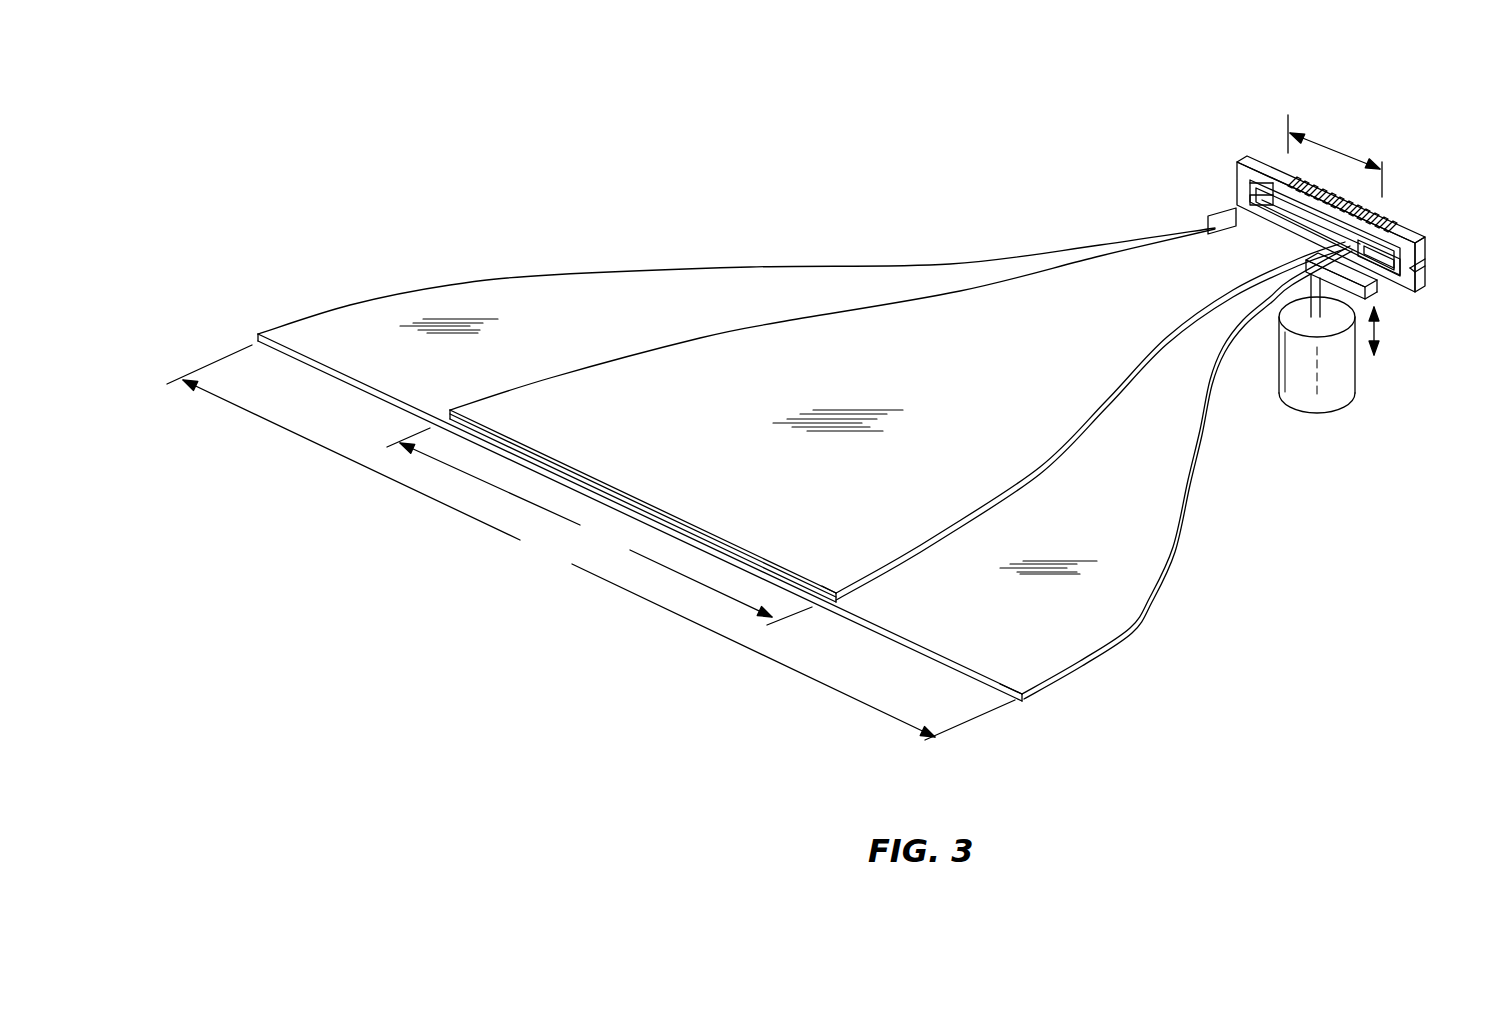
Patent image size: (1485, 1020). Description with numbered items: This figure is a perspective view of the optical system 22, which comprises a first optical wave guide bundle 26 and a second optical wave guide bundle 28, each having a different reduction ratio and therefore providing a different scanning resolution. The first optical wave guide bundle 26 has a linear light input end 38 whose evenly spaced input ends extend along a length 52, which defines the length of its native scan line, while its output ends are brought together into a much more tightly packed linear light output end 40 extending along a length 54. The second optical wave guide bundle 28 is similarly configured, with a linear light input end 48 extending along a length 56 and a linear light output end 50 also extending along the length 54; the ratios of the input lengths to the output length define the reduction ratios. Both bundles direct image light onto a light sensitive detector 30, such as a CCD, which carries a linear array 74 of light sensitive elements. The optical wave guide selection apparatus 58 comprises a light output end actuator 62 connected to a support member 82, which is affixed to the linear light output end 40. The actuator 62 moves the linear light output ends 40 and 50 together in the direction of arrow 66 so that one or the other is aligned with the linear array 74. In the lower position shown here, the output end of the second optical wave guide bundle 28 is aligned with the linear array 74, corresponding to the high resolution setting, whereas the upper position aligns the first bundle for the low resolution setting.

The optical system 22 is at (470, 122).
The first optical wave guide bundle 26 is at (1178, 548).
The second optical wave guide bundle 28 is at (1052, 468).
The light sensitive detector 30 is at (1237, 170).
The linear light input end 38 is at (1022, 694).
The linear light output end 40 is at (1330, 268).
The linear light input end 48 is at (842, 596).
The linear light output end 50 is at (1385, 235).
The length 52 is at (591, 542).
The length 54 is at (1330, 153).
The length 56 is at (599, 526).
The optical wave guide selection apparatus 58 is at (1358, 375).
The light output end actuator 62 is at (1328, 405).
The arrow 66 is at (1377, 331).
The linear array 74 is at (1245, 205).
The support member 82 is at (1206, 225).